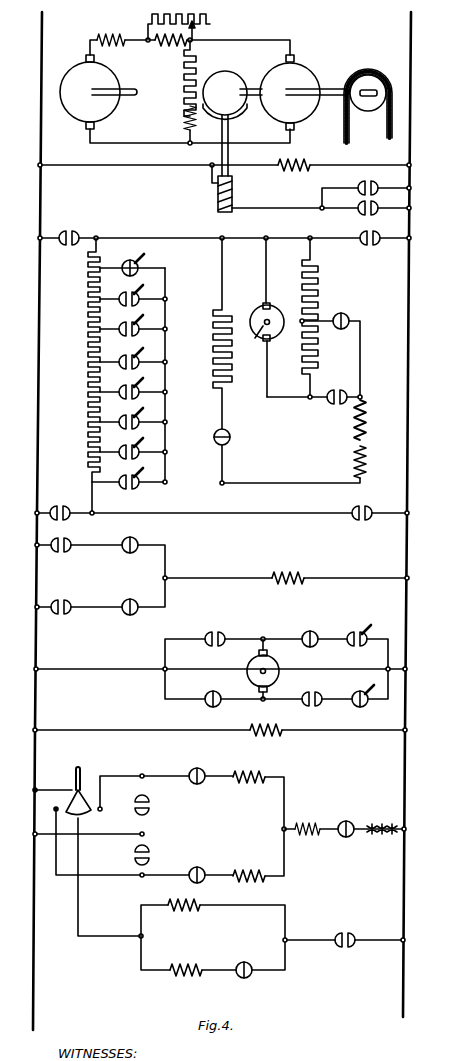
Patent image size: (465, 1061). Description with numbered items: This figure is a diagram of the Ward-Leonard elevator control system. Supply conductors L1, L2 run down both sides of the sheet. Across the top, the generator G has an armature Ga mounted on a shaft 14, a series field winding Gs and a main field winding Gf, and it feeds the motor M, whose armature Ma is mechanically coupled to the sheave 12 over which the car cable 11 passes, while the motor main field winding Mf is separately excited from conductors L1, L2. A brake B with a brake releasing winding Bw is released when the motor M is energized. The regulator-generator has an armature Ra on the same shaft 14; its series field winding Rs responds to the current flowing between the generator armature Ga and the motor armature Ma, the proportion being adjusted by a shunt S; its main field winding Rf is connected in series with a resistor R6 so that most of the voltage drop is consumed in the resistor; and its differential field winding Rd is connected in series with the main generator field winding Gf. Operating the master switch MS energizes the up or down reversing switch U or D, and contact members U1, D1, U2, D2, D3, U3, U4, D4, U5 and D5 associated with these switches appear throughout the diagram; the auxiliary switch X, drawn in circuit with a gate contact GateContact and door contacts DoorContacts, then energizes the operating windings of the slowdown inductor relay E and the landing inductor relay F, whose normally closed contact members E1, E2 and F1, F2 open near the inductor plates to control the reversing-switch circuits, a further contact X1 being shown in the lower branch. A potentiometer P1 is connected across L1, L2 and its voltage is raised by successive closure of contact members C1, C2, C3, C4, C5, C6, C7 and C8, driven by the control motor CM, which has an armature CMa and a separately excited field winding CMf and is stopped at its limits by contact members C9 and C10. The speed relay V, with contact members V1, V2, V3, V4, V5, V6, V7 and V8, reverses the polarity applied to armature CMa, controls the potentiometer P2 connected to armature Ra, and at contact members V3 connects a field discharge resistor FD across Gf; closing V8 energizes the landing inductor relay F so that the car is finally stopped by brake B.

The energized conductor L1 is at (39, 62).
The energized conductor L2 is at (413, 71).
The generator G is at (138, 86).
The generator armature Ga is at (66, 64).
The series field winding Gs is at (99, 34).
The series field winding Rs is at (173, 44).
The resistor R6 is at (198, 65).
The shunt S is at (214, 19).
The main field winding Rf is at (183, 121).
The shaft 14 is at (134, 94).
The brake B is at (240, 116).
The motor M is at (322, 53).
The motor armature Ma is at (319, 77).
The sheave 12 is at (368, 72).
The cable 11 is at (390, 126).
The main field winding Mf is at (302, 164).
The brake releasing winding Bw is at (238, 190).
The up contact U1 is at (377, 185).
The down contact D1 is at (377, 206).
The up contact U2 is at (73, 235).
The down contact D2 is at (376, 235).
The potentiometer P1 is at (64, 354).
The contact members C1 is at (126, 264).
The contact members C2 is at (132, 292).
The contact members C3 is at (132, 322).
The contact members C4 is at (132, 355).
The contact members C5 is at (132, 385).
The contact members C6 is at (132, 415).
The contact members C7 is at (132, 445).
The contact members C8 is at (128, 475).
The field discharge resistor FD is at (212, 348).
The contact members V3 is at (228, 431).
The regulator-generator armature Ra is at (272, 312).
The potentiometer P2 is at (319, 288).
The contact members V1 is at (342, 313).
The contact members V2 is at (339, 391).
The differential field winding Rd is at (366, 418).
The main field winding Gf is at (365, 469).
The down contact D3 is at (72, 506).
The up contact U3 is at (372, 511).
The up contact U4 is at (73, 542).
The contact members E1 is at (140, 542).
The down contact D4 is at (65, 598).
The contact members E2 is at (141, 604).
The speed relay V is at (289, 572).
The relay contact V4 is at (224, 633).
The relay coil V5 is at (317, 633).
The contact members C9 is at (359, 627).
The control motor armature CMa is at (279, 666).
The relay coil V6 is at (221, 693).
The relay contact V7 is at (320, 693).
The contact members C10 is at (354, 693).
The control motor CM is at (229, 711).
The field winding CMf is at (277, 730).
The master switch MS is at (78, 755).
The up contact U5 is at (151, 802).
The down contact D5 is at (151, 860).
The contact members F1 is at (205, 770).
The up reversing switch U is at (249, 770).
The contact members F2 is at (204, 869).
The down reversing switch D is at (253, 868).
The auxiliary switch X is at (311, 817).
The gate contact GateContact is at (344, 821).
The door contacts DoorContacts is at (370, 834).
The slowdown inductor relay E is at (195, 902).
The landing inductor relay F is at (195, 961).
The contact members V8 is at (247, 961).
The contact X1 is at (355, 935).